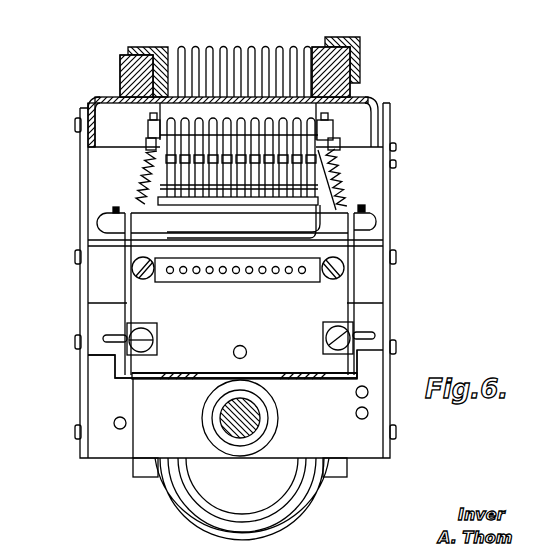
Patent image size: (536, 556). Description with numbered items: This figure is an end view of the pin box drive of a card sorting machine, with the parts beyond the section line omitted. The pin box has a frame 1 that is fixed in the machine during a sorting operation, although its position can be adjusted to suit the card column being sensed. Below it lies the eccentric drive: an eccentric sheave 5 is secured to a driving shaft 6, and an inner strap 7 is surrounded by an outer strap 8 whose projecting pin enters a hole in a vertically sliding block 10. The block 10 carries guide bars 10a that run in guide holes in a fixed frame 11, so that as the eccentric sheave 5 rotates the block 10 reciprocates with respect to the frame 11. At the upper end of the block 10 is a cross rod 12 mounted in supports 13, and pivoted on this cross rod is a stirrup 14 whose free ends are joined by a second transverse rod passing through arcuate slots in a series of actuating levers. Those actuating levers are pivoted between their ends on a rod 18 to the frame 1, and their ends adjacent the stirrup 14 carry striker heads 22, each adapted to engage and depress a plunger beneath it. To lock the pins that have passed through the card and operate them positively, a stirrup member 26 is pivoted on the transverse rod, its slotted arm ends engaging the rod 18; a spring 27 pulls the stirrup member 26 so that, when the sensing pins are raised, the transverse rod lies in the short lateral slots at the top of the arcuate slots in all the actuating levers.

The frame 1 is at (145, 54).
The striker heads 22 is at (258, 47).
The rod 18 is at (328, 130).
The stirrup member 26 is at (338, 138).
The spring 27 is at (357, 170).
The stirrup 14 is at (340, 202).
The supports 13 is at (160, 247).
The cross rod 12 is at (190, 215).
The vertically sliding block 10 is at (148, 303).
The fixed frame 11 is at (147, 390).
The guide bars 10a is at (142, 463).
The eccentric sheave 5 is at (233, 465).
The driving shaft 6 is at (247, 413).
The inner strap 7 is at (227, 490).
The outer strap 8 is at (285, 493).